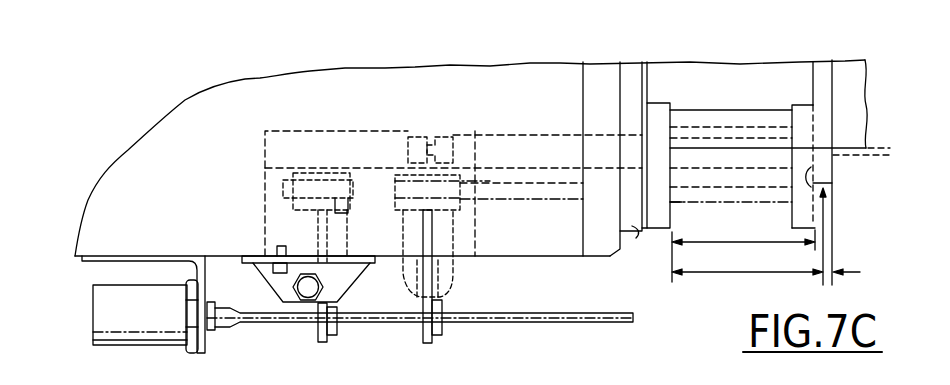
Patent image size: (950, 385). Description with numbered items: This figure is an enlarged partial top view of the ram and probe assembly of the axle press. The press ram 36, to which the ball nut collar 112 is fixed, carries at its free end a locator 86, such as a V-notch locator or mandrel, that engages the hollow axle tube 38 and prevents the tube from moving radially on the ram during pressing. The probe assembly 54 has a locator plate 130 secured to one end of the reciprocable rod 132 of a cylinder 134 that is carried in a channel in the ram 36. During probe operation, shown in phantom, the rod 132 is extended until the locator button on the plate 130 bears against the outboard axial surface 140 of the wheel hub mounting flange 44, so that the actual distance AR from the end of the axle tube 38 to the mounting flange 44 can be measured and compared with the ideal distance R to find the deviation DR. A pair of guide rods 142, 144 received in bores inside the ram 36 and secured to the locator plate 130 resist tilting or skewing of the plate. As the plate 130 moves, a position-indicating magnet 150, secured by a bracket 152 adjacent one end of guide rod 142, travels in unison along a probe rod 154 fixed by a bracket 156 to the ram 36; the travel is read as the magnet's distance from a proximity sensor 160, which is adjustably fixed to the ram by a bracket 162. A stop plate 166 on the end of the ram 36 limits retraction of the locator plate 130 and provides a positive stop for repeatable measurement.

The ram 36 is at (500, 68).
The collar 112 is at (596, 70).
The locator plate 130 is at (660, 108).
The guide rod 144 is at (723, 110).
The locator 86 is at (847, 67).
The reciprocable rod 132 is at (752, 148).
The hollow axle tube 38 is at (883, 148).
The wheel hub mounting flange 44 is at (827, 175).
The outboard axial surface 140 is at (832, 200).
The guide rod 142 is at (683, 199).
The cylinder 134 is at (555, 138).
The stop plate 166 is at (636, 233).
The bracket 152 is at (452, 275).
The position-indicating magnet 150 is at (443, 337).
The probe rod 154 is at (614, 318).
The proximity sensor 160 is at (313, 293).
The bracket 162 is at (252, 268).
The bracket 156 is at (127, 260).
The probe assembly 54 is at (689, 288).